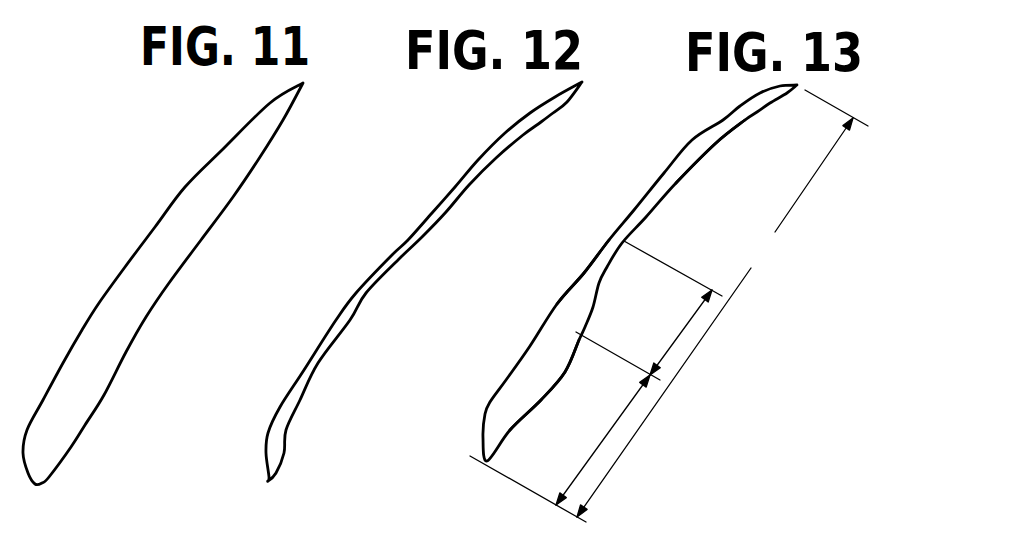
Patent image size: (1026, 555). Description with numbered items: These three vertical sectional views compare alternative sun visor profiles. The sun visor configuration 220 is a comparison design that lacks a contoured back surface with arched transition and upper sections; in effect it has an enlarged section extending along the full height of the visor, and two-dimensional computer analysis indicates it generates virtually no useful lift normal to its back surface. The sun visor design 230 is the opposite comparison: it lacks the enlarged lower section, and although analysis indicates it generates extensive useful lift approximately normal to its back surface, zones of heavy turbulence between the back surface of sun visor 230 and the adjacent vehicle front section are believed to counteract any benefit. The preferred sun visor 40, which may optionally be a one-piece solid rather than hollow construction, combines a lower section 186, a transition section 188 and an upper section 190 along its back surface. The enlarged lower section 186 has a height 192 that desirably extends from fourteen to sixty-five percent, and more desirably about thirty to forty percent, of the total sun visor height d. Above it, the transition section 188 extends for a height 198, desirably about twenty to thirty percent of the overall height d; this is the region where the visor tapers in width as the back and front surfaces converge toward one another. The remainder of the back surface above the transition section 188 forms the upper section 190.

In FIG. 11, the sun visor configuration 220 is at (88, 288).
In FIG. 12, the sun visor design 230 is at (368, 264).
In FIG. 13, the sun visor 40 is at (610, 212).
In FIG. 13, the upper section 190 is at (712, 148).
In FIG. 13, the transition section 188 is at (593, 280).
In FIG. 13, the height of transition section 198 is at (672, 338).
In FIG. 13, the height of enlarged lower portion 192 is at (609, 423).
In FIG. 13, the lower section 186 is at (532, 389).
In FIG. 13, the total sun visor height d is at (722, 303).